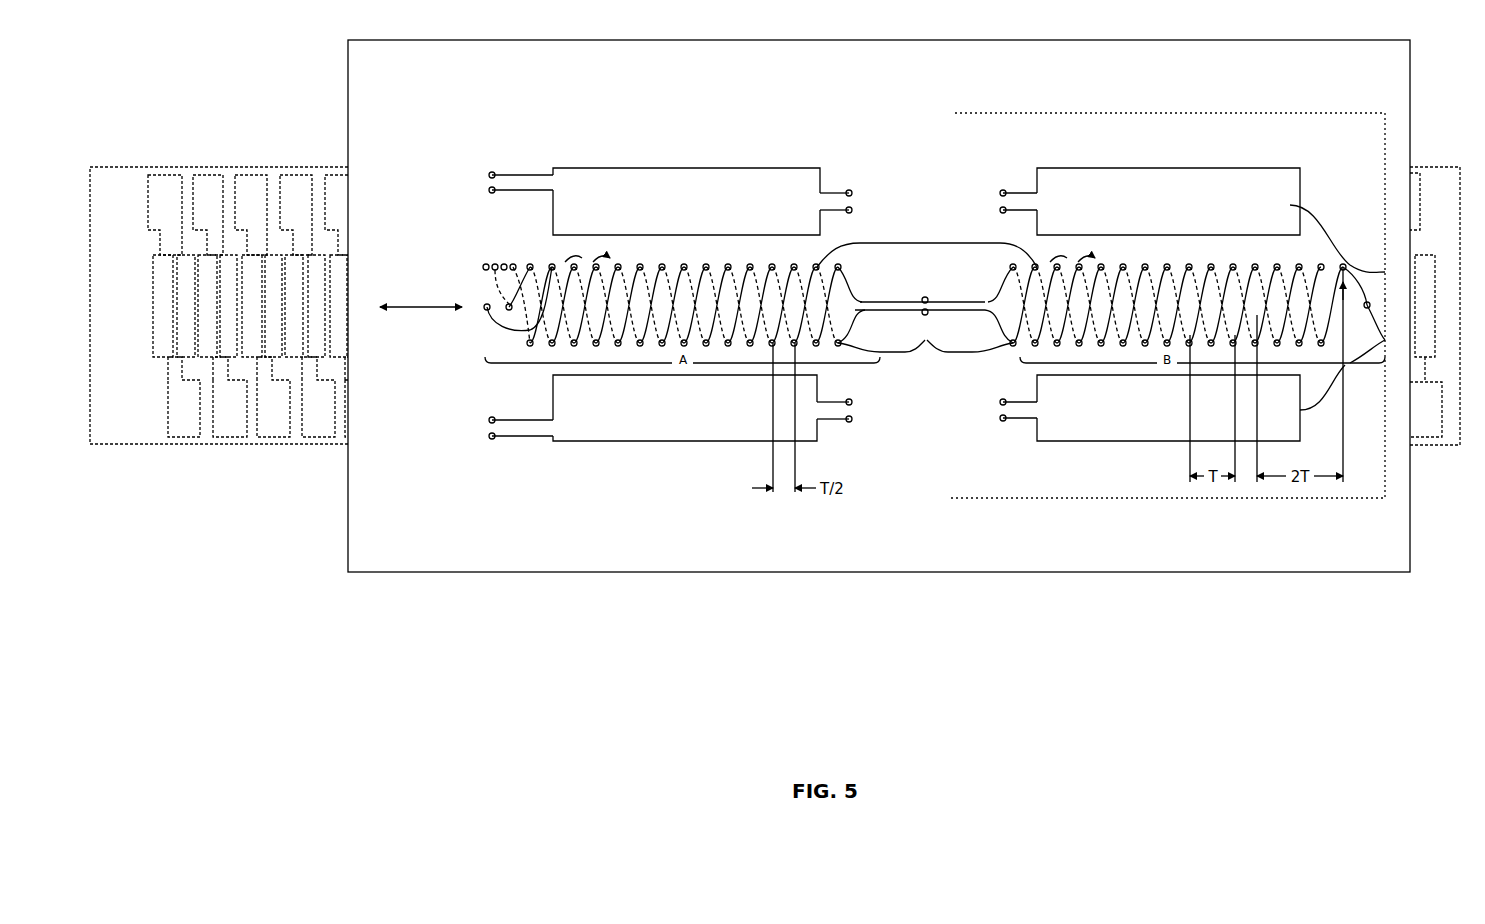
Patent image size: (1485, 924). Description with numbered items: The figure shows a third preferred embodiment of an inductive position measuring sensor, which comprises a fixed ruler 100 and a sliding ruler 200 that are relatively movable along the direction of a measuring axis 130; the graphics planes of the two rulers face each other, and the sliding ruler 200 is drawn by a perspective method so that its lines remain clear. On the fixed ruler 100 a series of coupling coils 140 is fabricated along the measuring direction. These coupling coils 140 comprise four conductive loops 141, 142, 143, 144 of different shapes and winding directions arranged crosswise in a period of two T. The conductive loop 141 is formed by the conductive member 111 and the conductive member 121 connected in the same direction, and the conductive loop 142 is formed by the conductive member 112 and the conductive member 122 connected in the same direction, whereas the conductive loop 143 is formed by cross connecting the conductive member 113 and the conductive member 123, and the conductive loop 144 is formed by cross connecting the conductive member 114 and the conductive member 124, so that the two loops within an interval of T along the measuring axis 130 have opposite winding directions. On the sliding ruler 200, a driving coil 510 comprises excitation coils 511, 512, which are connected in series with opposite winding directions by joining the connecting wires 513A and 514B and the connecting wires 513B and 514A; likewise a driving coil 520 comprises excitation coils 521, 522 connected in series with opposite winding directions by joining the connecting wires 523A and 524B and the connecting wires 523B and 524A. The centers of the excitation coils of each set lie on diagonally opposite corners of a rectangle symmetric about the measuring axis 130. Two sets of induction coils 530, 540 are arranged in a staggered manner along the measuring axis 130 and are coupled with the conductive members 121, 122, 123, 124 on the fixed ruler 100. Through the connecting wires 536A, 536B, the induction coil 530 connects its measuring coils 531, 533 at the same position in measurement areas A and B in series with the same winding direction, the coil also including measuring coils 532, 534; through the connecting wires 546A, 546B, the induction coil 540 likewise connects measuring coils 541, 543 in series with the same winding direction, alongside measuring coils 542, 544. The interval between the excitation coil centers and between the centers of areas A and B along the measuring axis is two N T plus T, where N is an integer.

The fixed ruler 100 is at (122, 445).
The conductive member 111 is at (165, 175).
The conductive member 112 is at (188, 440).
The conductive member 113 is at (206, 175).
The conductive member 114 is at (232, 440).
The conductive member 121 is at (172, 440).
The conductive member 122 is at (182, 248).
The conductive member 123 is at (214, 440).
The conductive member 124 is at (223, 248).
The measuring axis 130 is at (421, 306).
The coupling coils 140 is at (312, 380).
The conductive loop 141 is at (262, 292).
The conductive loop 142 is at (286, 258).
The conductive loop 143 is at (302, 292).
The conductive loop 144 is at (322, 258).
The sliding ruler 200 is at (397, 573).
The driving coil 510 is at (820, 182).
The excitation coil 511 is at (646, 190).
The excitation coil 512 is at (1166, 416).
The connecting wire 513A is at (851, 192).
The connecting wire 513B is at (851, 209).
The connecting wire 514A is at (1001, 404).
The connecting wire 514B is at (1001, 421).
The driving coil 520 is at (820, 435).
The excitation coil 521 is at (683, 428).
The excitation coil 522 is at (1203, 198).
The connecting wire 523A is at (851, 404).
The connecting wire 523B is at (851, 421).
The connecting wire 524A is at (1001, 192).
The connecting wire 524B is at (1001, 209).
The induction coil 530 is at (960, 243).
The measuring coil 531 is at (588, 345).
The measuring coil 532 is at (630, 345).
The measuring coil 533 is at (1073, 345).
The measuring coil 534 is at (1115, 345).
The connecting wire 536A is at (929, 298).
The connecting wire 536B is at (929, 315).
The induction coil 540 is at (948, 366).
The measuring coil 541 is at (567, 345).
The measuring coil 542 is at (610, 345).
The measuring coil 543 is at (1052, 345).
The measuring coil 544 is at (1095, 345).
The connecting wire 546A is at (898, 301).
The connecting wire 546B is at (898, 312).